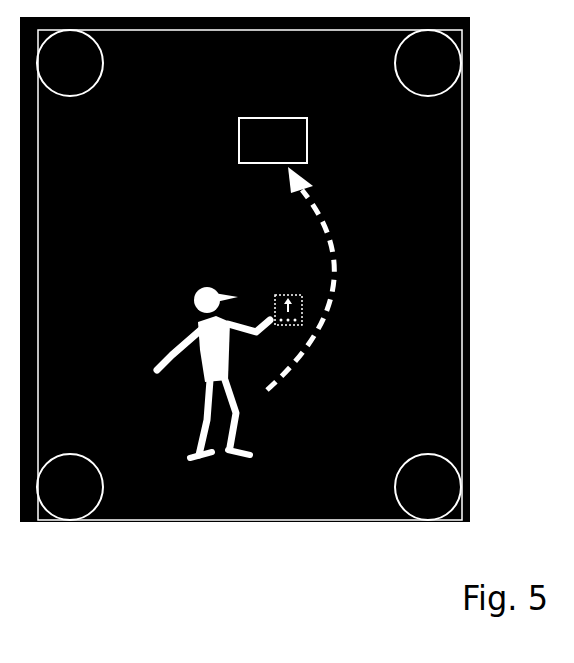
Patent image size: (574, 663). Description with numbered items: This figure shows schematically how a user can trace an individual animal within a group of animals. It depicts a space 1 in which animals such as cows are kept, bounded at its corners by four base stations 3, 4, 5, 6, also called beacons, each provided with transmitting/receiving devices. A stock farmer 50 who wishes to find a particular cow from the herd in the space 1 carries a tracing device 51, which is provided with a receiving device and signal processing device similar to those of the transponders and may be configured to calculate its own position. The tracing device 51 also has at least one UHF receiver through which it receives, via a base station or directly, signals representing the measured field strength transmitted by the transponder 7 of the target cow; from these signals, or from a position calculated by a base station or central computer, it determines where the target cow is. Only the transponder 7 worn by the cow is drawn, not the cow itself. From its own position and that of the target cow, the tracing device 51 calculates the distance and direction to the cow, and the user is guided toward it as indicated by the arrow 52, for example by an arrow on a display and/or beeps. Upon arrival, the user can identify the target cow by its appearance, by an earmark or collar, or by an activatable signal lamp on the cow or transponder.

The space 1 is at (430, 378).
The base station 3 is at (62, 502).
The base station 4 is at (420, 502).
The base station 5 is at (420, 78).
The base station 6 is at (62, 78).
The transponder 7 is at (273, 140).
The stock farmer 50 is at (195, 388).
The tracing device 51 is at (280, 292).
The arrow 52 is at (338, 321).